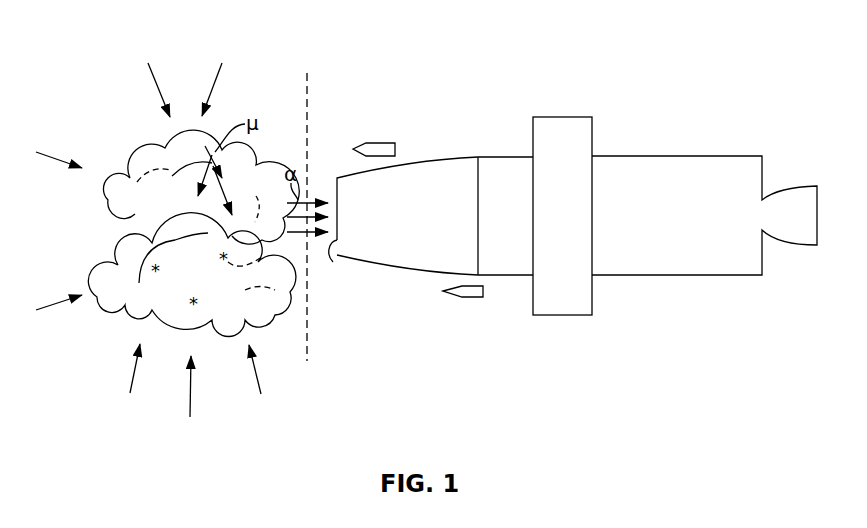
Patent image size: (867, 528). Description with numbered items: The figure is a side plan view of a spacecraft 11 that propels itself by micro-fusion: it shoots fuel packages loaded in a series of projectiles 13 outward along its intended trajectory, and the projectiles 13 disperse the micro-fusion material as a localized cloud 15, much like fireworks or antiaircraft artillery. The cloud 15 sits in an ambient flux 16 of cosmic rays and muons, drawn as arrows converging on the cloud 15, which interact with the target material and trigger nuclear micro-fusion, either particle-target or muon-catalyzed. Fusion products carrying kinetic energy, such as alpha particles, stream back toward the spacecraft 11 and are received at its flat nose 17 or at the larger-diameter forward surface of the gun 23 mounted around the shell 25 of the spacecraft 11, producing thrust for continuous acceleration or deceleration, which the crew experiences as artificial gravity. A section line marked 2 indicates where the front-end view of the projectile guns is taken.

The spacecraft 11 is at (123, 33).
The projectiles 13 is at (383, 143).
The localized cloud 15 is at (252, 158).
The ambient flux 16 is at (157, 97).
The flat nose 17 is at (333, 262).
The gun 23 is at (562, 316).
The shell 25 is at (683, 277).
The section line 2- 2 is at (307, 73).